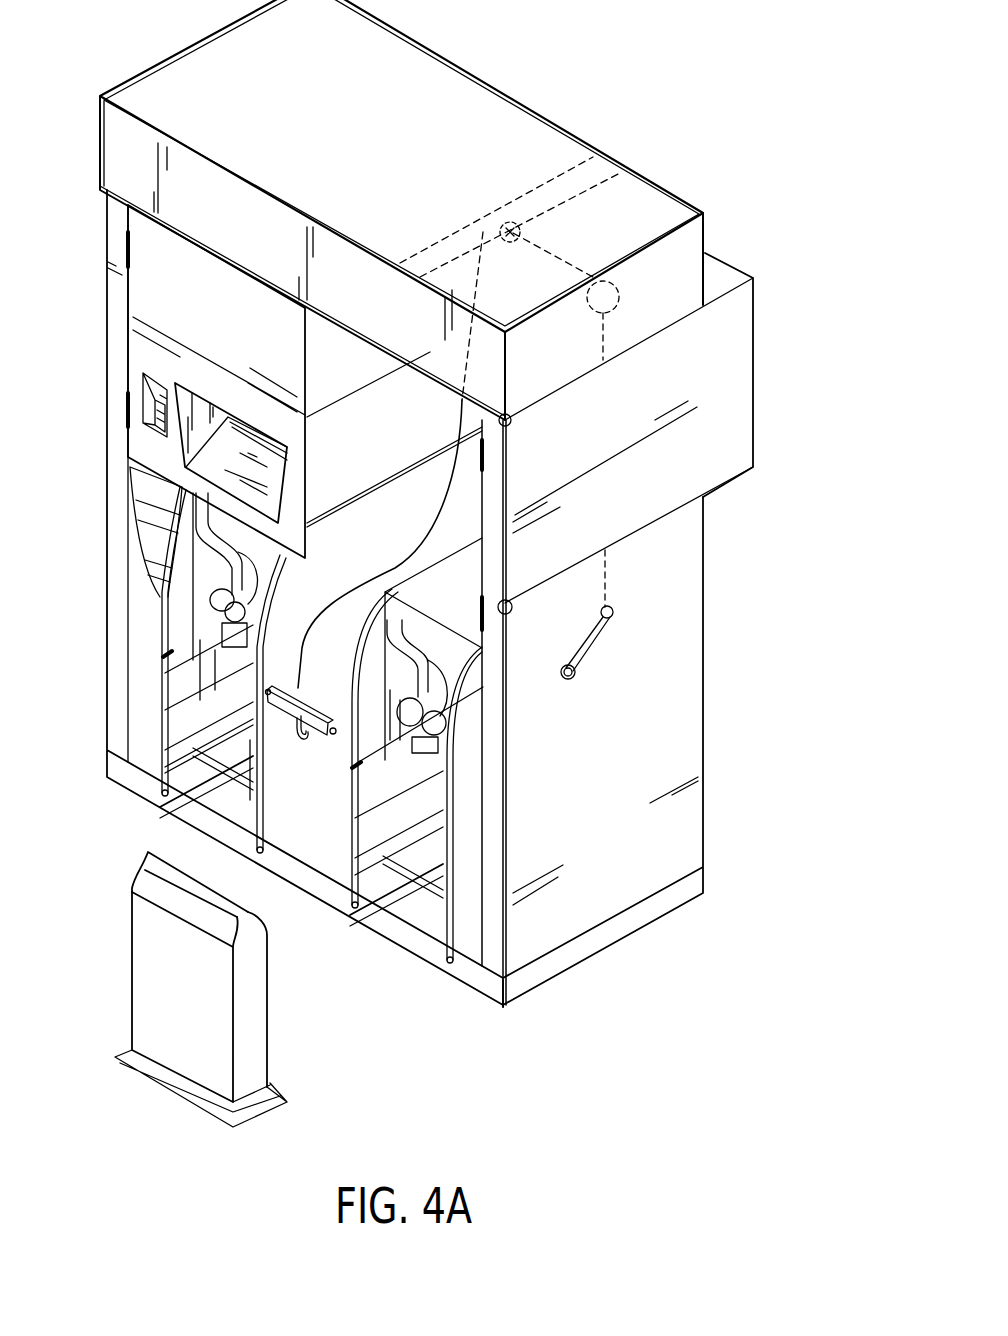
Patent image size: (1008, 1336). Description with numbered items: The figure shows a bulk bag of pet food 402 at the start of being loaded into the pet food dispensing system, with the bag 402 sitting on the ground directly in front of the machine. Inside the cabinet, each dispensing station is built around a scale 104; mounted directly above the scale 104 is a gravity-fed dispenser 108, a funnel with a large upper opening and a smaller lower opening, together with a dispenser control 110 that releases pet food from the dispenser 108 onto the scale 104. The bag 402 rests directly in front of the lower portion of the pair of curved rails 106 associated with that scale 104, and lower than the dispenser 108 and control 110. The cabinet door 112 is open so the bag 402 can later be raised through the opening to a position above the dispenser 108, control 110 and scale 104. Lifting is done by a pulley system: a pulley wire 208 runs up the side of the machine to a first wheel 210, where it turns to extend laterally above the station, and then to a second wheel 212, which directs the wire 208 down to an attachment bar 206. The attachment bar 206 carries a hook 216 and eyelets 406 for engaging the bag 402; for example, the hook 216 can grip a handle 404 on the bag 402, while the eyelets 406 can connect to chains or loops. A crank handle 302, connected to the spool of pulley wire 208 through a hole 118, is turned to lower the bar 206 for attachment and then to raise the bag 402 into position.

The scale 104 is at (430, 800).
The pair of curved rails 106 is at (455, 752).
The gravity-fed dispenser 108 is at (609, 610).
The dispenser control 110 is at (574, 670).
The cabinet door 112 is at (697, 465).
The hole 118 is at (485, 640).
The attachment bar 206 is at (290, 718).
The pulley wire 208 is at (453, 457).
The first wheel 210 is at (618, 277).
The second wheel 212 is at (510, 222).
The hook 216 is at (290, 740).
The crank handle 302 is at (610, 630).
The bulk bag of pet food 402 is at (157, 1007).
The handle 404 is at (237, 917).
The eyelets 406 is at (266, 690).